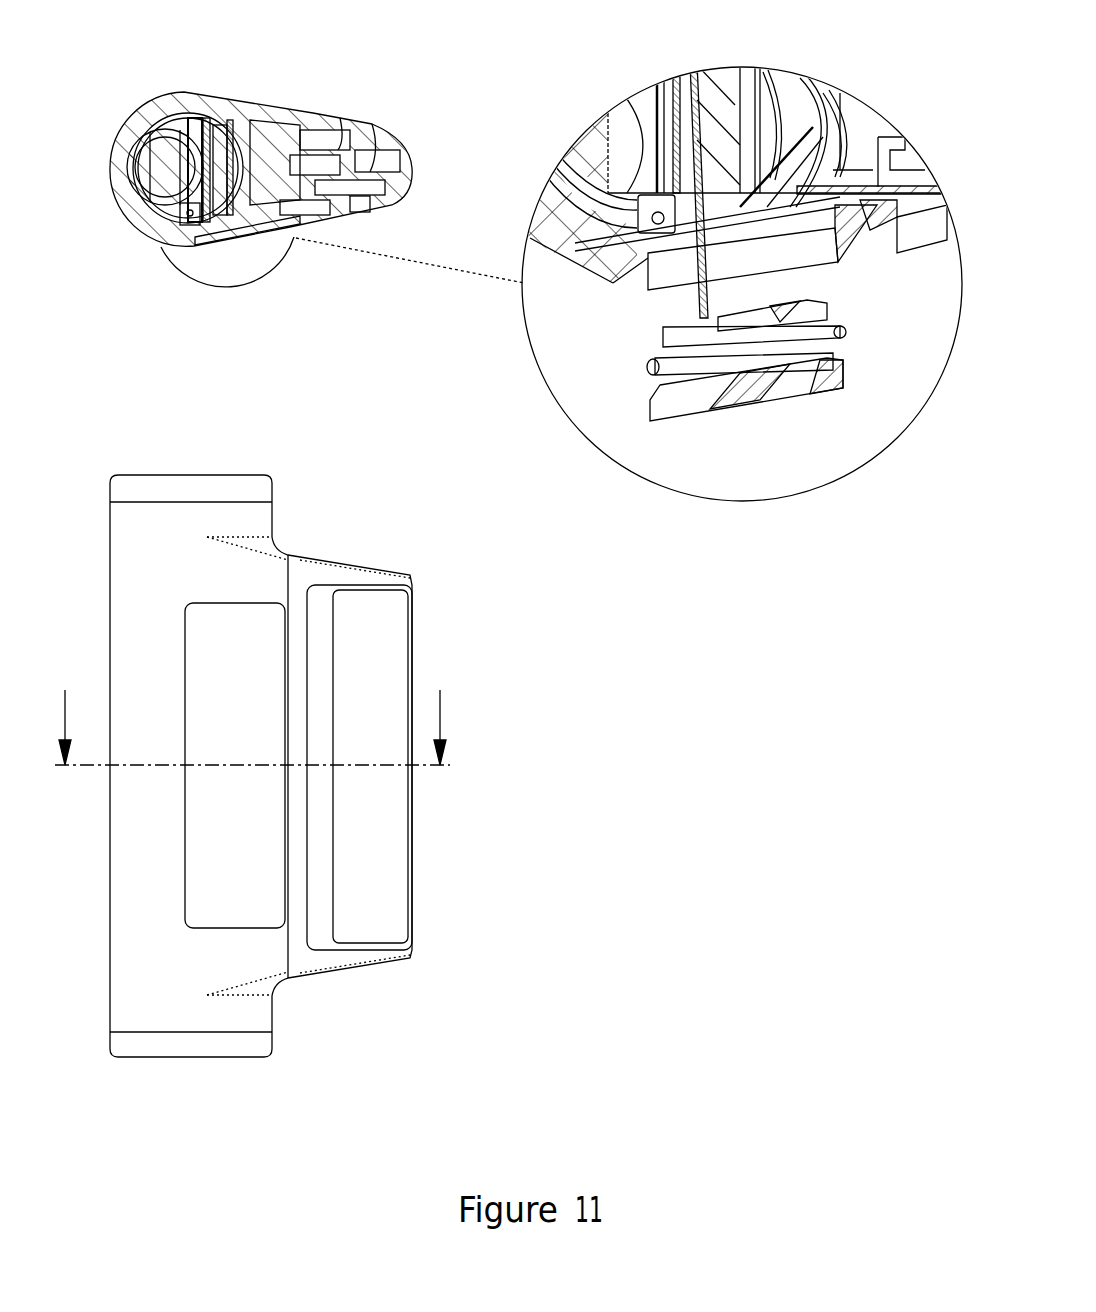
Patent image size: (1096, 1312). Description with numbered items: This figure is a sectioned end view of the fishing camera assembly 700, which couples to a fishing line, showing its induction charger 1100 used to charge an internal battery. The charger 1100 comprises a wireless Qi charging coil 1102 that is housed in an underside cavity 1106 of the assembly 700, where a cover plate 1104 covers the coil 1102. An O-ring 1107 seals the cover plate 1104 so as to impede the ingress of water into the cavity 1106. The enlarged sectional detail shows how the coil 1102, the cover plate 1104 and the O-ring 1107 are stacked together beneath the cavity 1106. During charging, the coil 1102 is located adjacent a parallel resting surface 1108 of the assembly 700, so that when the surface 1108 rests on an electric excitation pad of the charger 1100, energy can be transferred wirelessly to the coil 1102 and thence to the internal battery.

The fishing camera assembly 700 is at (146, 56).
The induction charger 1100 is at (705, 483).
The wireless Qi charging coil 1102 is at (807, 308).
The cover plate 1104 is at (835, 370).
The underside cavity 1106 is at (715, 262).
The O-ring 1107 is at (847, 333).
The parallel resting surface 1108 is at (243, 240).